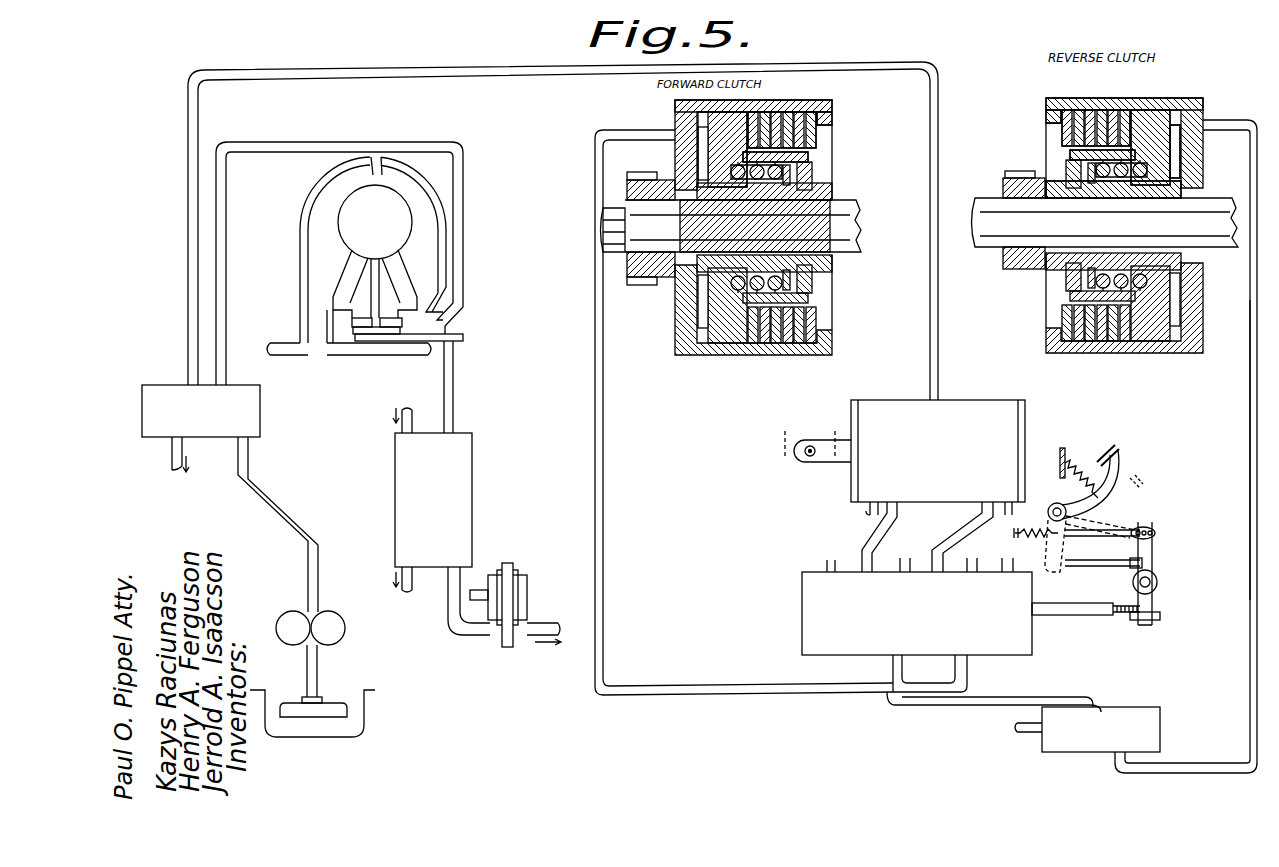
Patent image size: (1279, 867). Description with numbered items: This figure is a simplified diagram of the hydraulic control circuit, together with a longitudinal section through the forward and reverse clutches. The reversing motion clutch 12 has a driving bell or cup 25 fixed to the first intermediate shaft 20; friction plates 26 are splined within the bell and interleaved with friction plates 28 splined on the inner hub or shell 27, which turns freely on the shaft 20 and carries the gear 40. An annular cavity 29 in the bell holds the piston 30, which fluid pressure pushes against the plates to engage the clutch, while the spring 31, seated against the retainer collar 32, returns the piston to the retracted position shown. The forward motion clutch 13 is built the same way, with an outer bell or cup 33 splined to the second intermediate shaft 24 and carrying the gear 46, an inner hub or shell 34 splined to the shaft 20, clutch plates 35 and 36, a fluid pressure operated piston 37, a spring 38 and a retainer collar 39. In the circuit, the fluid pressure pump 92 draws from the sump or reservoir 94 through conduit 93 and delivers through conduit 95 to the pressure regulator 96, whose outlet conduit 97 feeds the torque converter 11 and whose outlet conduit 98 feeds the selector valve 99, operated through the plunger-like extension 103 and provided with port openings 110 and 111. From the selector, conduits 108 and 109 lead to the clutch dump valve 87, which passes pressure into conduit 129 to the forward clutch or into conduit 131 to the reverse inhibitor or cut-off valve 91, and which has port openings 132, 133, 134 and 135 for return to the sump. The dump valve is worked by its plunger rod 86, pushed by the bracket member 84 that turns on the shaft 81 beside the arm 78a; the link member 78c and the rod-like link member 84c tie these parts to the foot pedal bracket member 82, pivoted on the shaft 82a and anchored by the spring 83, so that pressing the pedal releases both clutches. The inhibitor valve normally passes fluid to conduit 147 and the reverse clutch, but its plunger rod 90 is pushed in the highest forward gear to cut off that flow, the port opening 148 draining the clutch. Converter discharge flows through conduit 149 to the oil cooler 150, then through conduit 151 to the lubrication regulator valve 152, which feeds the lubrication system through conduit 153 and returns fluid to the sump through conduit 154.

The torque converter 11 is at (296, 202).
The reversing motion clutch 12 is at (1157, 95).
The forward motion clutch 13 is at (813, 88).
The first intermediate shaft 20 is at (856, 207).
The second intermediate shaft 24 is at (617, 205).
The driving bell or cup 25 is at (1185, 96).
The friction plates 26 is at (1068, 112).
The inner hub or shell 27 is at (1068, 160).
The friction plates 28 is at (1052, 128).
The annular cavity 29 is at (1185, 147).
The piston 30 is at (1170, 165).
The spring 31 is at (1128, 190).
The retainer collar 32 is at (1108, 190).
The outer bell or cup 33 is at (675, 105).
The inner hub or shell 34 is at (812, 162).
The clutch plates 35 is at (800, 110).
The clutch plates 36 is at (810, 138).
The fluid pressure operated piston 37 is at (712, 151).
The spring 38 is at (738, 222).
The retainer collar 39 is at (800, 183).
The gear 40 is at (1010, 180).
The gear 46 is at (641, 291).
The arm 78a is at (1136, 545).
The link member 78c is at (1128, 534).
The shaft 81 is at (1157, 582).
The foot pedal bracket member 82 is at (1100, 455).
The shaft 82a is at (1052, 508).
The spring 83 is at (1081, 486).
The bracket member 84 is at (1132, 598).
The rod-like link member 84c is at (1118, 568).
The plunger rod 86 is at (1082, 615).
The clutch dump valve 87 is at (791, 575).
The plunger rod 90 is at (1025, 733).
The reverse inhibitor or cut-off valve 91 is at (1148, 702).
The fluid pressure pump 92 is at (324, 619).
The conduit 93 is at (316, 688).
The sump or reservoir 94 is at (360, 690).
The conduit 95 is at (290, 520).
The pressure regulator 96 is at (268, 430).
The outlet conduit 97 is at (226, 318).
The outlet conduit 98 is at (186, 300).
The selector valve 99 is at (840, 413).
The plunger-like extension 103 is at (805, 465).
The conduit 108 is at (968, 533).
The conduit 109 is at (890, 547).
The port opening 110 is at (866, 502).
The port opening 111 is at (1008, 505).
The conduit 129 is at (603, 414).
The conduit 131 is at (1034, 696).
The port opening 132 is at (1003, 566).
The port opening 133 is at (967, 566).
The port opening 134 is at (900, 566).
The port opening 135 is at (826, 562).
The conduit 147 is at (1249, 632).
The port opening 148 is at (1140, 761).
The conduit 149 is at (446, 391).
The oil cooler 150 is at (480, 470).
The conduit 151 is at (456, 574).
The lubrication regulator valve 152 is at (512, 558).
The conduit 153 is at (540, 620).
The conduit 154 is at (478, 592).